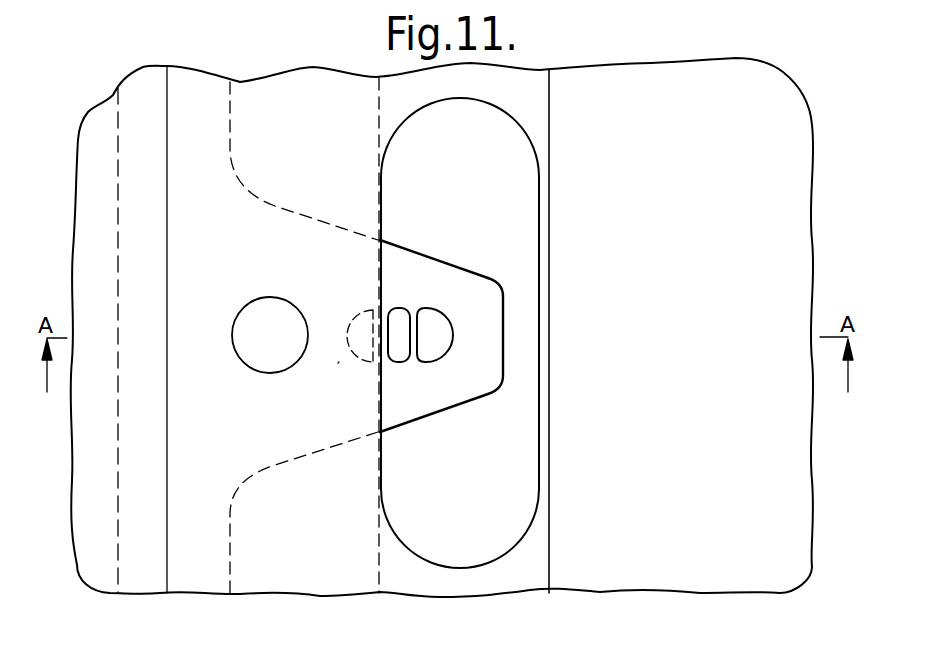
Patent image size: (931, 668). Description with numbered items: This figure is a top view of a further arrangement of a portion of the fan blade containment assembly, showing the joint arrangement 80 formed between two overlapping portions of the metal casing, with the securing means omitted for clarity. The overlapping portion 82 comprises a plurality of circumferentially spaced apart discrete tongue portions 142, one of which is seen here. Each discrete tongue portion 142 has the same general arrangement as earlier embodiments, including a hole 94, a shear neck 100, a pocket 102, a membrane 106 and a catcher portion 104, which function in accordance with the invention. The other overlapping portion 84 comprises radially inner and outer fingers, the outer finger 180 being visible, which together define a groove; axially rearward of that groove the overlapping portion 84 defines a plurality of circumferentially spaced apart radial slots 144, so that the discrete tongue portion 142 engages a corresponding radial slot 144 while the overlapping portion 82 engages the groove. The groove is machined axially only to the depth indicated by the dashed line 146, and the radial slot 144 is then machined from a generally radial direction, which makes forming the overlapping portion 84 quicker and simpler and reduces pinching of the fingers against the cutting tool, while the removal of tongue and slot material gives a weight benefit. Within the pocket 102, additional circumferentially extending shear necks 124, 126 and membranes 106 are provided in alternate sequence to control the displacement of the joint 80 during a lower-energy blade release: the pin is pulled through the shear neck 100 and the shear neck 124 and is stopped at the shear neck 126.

The joint arrangement 80 is at (552, 92).
The overlapping portion 82 is at (142, 563).
The overlapping portion 84 is at (651, 62).
The circular hole 94 is at (268, 362).
The shear neck 100 is at (338, 363).
The pocket 102 is at (453, 335).
The catcher portion 104 is at (490, 343).
The membrane 106 is at (427, 362).
The shear neck 124 is at (373, 328).
The shear neck 126 is at (440, 317).
The discrete tongue portion 142 is at (431, 247).
The radial slot 144 is at (521, 526).
The dashed line 146 is at (380, 552).
The outer finger 180 is at (312, 570).